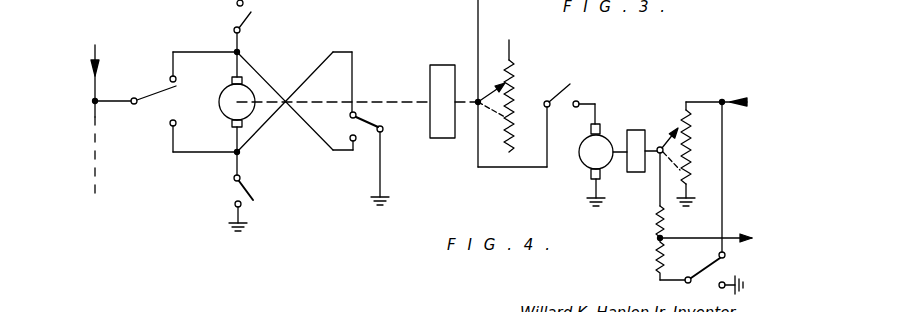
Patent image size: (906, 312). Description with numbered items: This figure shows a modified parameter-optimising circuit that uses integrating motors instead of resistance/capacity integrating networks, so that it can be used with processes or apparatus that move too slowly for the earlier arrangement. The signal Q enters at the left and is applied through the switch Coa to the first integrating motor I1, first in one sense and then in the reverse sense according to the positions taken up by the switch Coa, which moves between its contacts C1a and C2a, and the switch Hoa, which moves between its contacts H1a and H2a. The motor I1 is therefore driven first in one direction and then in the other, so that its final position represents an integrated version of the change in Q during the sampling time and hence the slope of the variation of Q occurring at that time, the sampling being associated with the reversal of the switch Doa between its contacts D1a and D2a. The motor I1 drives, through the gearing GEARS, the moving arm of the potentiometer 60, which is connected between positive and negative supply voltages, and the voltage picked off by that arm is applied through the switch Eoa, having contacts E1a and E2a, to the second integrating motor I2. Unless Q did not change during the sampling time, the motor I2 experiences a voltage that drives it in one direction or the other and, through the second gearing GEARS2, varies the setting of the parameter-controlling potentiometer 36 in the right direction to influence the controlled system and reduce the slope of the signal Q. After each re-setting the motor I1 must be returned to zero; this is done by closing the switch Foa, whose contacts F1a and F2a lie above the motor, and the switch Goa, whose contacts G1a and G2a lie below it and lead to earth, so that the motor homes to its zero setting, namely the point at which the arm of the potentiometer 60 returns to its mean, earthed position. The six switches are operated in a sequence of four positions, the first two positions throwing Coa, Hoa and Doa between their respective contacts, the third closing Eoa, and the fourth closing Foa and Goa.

The signal Q is at (93, 113).
The switch Coa is at (136, 94).
The contact C1a is at (170, 77).
The contact C2a is at (170, 125).
The switch F contact 1 F1a is at (220, 5).
The switch F contact 2 F2a is at (217, 51).
The switch Foa is at (262, 26).
The integrating motor I1 is at (221, 106).
The switch G contact 1 G1a is at (216, 177).
The switch Goa is at (256, 184).
The switch G contact 2 G2a is at (234, 206).
The contact H1a is at (358, 113).
The contact H2a is at (358, 140).
The switch Hoa is at (388, 161).
The gearing GEARS is at (443, 72).
The potentiometer 60 is at (517, 63).
The switch E contact 1 E1a is at (548, 89).
The switch E contact 2 E2a is at (592, 98).
The switch Eoa is at (575, 126).
The integrating motor I2 is at (578, 164).
The gearing GEARS2 is at (637, 173).
The parameter-controlling potentiometer 36 is at (682, 108).
The voltage input Va is at (716, 164).
The switch Doa is at (682, 217).
The contact D1a is at (692, 267).
The contact D2a is at (739, 276).